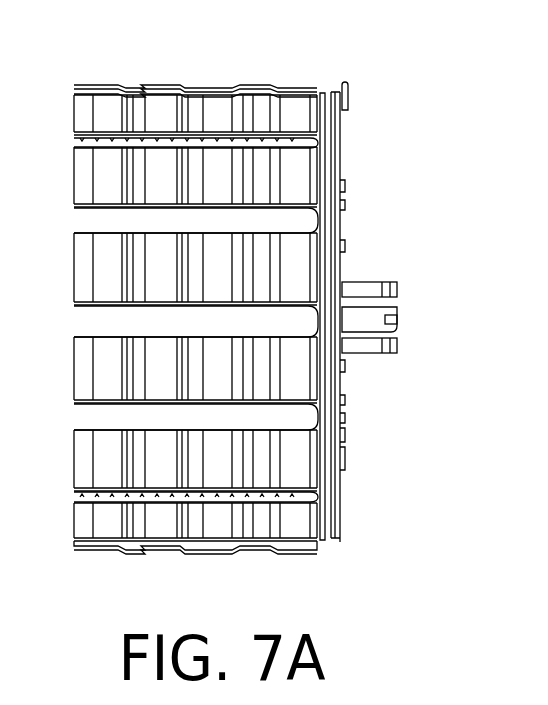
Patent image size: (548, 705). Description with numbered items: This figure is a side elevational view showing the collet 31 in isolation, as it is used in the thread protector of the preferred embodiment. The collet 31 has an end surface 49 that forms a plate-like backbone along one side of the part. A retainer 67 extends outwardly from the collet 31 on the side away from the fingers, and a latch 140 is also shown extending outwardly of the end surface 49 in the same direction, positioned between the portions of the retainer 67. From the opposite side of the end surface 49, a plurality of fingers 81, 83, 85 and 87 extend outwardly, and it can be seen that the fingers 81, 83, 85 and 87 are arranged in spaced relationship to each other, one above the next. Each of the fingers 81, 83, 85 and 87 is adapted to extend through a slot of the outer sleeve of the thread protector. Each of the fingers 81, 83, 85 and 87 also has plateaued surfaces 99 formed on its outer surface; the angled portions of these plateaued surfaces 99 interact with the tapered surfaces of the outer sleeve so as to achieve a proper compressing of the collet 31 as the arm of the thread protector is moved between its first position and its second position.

The collet 31 is at (291, 58).
The plateaued surfaces 99 is at (105, 158).
The finger 81 is at (73, 184).
The finger 83 is at (73, 272).
The finger 85 is at (87, 368).
The finger 87 is at (87, 464).
The end surface 49 is at (323, 195).
The retainer 67 is at (375, 283).
The latch 140 is at (393, 313).